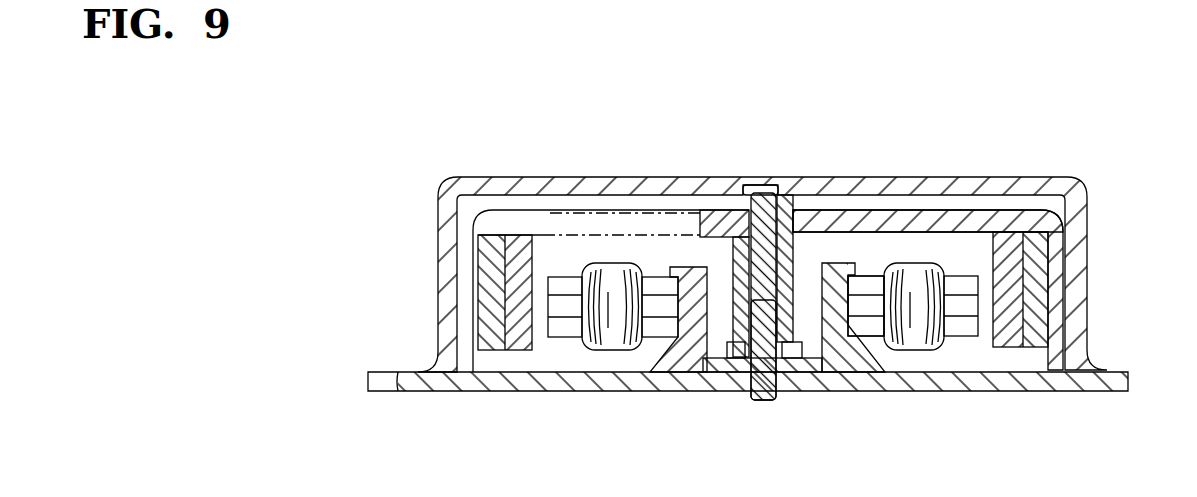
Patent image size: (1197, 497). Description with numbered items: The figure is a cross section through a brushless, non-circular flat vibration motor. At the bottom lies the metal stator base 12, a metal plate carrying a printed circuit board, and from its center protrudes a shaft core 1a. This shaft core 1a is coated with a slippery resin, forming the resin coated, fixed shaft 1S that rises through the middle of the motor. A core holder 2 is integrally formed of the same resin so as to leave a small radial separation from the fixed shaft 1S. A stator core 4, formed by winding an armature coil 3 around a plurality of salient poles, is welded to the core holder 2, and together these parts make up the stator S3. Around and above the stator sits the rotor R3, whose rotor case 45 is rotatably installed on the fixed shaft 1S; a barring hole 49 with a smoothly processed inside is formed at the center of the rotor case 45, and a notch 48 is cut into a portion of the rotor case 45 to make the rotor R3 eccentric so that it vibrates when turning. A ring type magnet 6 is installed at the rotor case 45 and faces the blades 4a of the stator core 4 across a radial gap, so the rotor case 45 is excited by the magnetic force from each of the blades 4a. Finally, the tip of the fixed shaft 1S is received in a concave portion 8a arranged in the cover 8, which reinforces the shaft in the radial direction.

The cover 8 is at (445, 207).
The concave portion 8a is at (743, 187).
The resin coated fixed shaft 1S is at (790, 193).
The shaft core 1a is at (762, 322).
The rotor case 45 is at (855, 222).
The rotor R3 is at (943, 204).
The armature coil 3 is at (935, 267).
The stator core 4 is at (997, 272).
The blades 4a is at (960, 285).
The ring type magnet 6 is at (1012, 295).
The notch 48 is at (552, 226).
The barring hole 49 is at (732, 273).
The core holder 2 is at (833, 323).
The stator S3 is at (947, 346).
The metal stator base 12 is at (1046, 376).